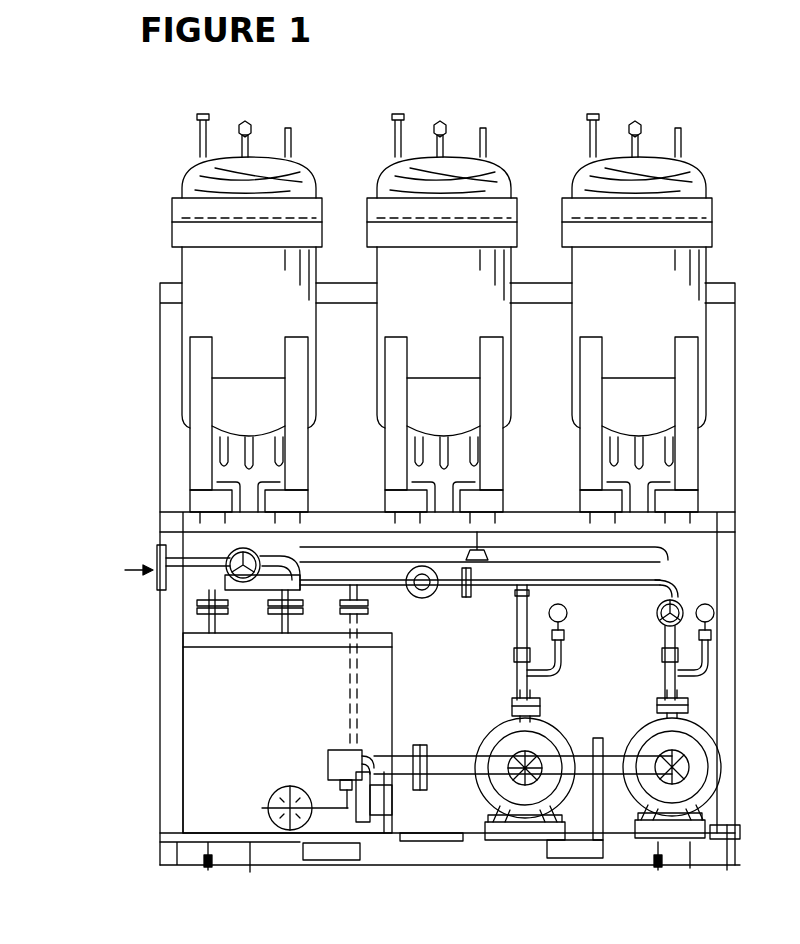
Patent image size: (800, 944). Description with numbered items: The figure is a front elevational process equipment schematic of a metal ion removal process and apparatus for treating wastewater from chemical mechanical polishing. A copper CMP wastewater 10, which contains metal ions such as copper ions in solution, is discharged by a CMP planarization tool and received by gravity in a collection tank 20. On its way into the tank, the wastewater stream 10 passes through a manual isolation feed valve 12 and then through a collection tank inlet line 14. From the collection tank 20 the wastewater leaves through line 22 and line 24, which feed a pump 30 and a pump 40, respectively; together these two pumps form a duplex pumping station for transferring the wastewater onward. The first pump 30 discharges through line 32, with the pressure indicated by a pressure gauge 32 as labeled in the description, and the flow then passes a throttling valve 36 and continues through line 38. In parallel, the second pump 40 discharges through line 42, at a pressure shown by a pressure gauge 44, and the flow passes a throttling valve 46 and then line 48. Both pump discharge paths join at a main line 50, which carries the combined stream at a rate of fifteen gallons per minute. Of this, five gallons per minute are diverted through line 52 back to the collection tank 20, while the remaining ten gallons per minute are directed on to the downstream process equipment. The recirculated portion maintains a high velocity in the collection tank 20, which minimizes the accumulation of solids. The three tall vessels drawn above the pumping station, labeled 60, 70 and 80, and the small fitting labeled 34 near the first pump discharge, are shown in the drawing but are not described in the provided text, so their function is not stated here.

The copper CMP wastewater 10 is at (176, 575).
The manual isolation feed valve 12 is at (235, 553).
The collection tank inlet line 14 is at (278, 623).
The collection tank 20 is at (218, 723).
The line 22 is at (450, 750).
The line 24 is at (606, 742).
The pump 30 is at (500, 722).
The line 32 is at (518, 635).
The gauge pipe 34 is at (567, 630).
The throttling valve 36 is at (563, 606).
The line 38 is at (350, 662).
The pump 40 is at (660, 722).
The line 42 is at (662, 635).
The pressure gauge 44 is at (717, 628).
The throttling valve 46 is at (683, 603).
The line 48 is at (650, 578).
The main line 50 is at (400, 592).
The line 52 is at (367, 618).
The filter vessel 60 is at (690, 165).
The filter vessel 70 is at (490, 163).
The filter vessel 80 is at (295, 165).